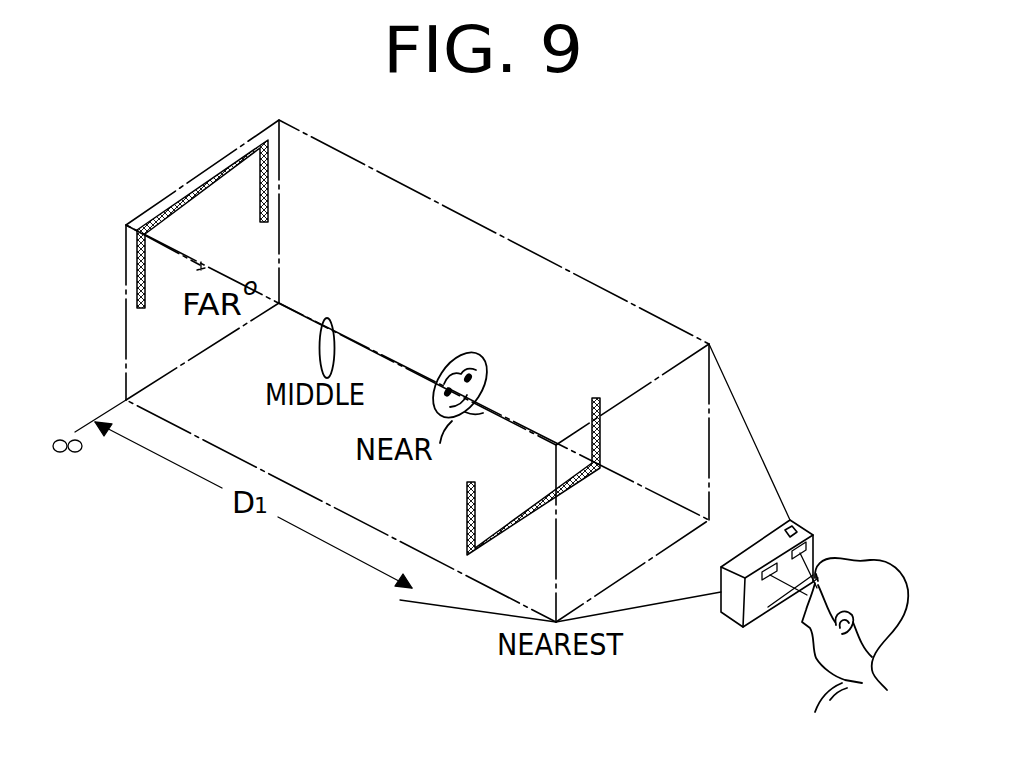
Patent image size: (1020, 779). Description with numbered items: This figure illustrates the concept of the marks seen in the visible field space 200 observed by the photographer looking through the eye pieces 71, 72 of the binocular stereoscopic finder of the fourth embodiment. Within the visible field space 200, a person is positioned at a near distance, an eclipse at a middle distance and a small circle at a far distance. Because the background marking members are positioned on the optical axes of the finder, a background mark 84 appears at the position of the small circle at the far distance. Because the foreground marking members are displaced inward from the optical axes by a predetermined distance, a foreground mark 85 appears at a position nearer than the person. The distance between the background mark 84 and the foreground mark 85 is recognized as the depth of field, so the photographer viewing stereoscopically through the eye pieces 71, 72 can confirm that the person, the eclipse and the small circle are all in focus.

The visible field space 200 is at (538, 253).
The background mark 84 is at (225, 170).
The foreground mark 85 is at (589, 416).
The eye piece 71 is at (806, 548).
The eye piece 72 is at (768, 582).